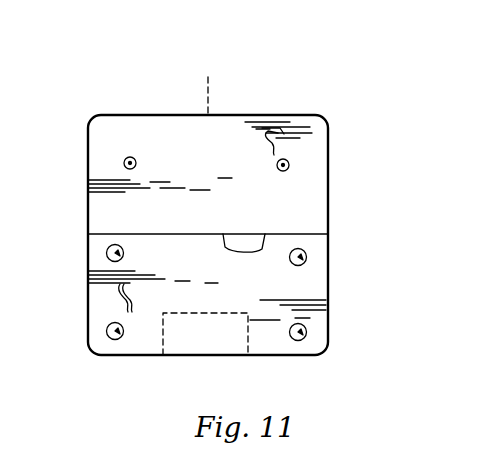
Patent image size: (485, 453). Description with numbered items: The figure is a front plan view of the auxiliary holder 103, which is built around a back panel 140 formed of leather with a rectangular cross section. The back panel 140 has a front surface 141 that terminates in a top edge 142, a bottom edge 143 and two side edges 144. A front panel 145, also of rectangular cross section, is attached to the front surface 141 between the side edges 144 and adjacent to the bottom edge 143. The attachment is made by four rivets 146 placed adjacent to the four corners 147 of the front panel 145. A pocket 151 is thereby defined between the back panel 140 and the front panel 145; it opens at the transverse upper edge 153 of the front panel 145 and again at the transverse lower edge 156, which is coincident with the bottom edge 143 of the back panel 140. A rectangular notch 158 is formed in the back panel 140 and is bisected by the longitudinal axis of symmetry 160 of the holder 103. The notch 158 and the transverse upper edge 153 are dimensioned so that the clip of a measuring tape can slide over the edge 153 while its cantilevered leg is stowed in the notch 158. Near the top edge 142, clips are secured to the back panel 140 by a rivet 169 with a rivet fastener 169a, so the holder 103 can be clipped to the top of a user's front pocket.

The auxiliary holder 103 is at (128, 78).
The back panel 140 is at (225, 115).
The front surface 141 is at (278, 140).
The top edge 142 is at (272, 115).
The bottom edge 143 is at (200, 357).
The side edges 144 is at (88, 152).
The front panel 145 is at (114, 298).
The rivets 146 is at (107, 258).
The corners 147 is at (88, 235).
The pocket 151 is at (240, 250).
The transverse upper edge 153 is at (148, 232).
The transverse lower edge 156 is at (124, 357).
The rectangular notch 158 is at (206, 313).
The longitudinal axis of symmetry 160 is at (208, 89).
The rivet 169 is at (138, 165).
The rivet fastener 169a is at (136, 160).